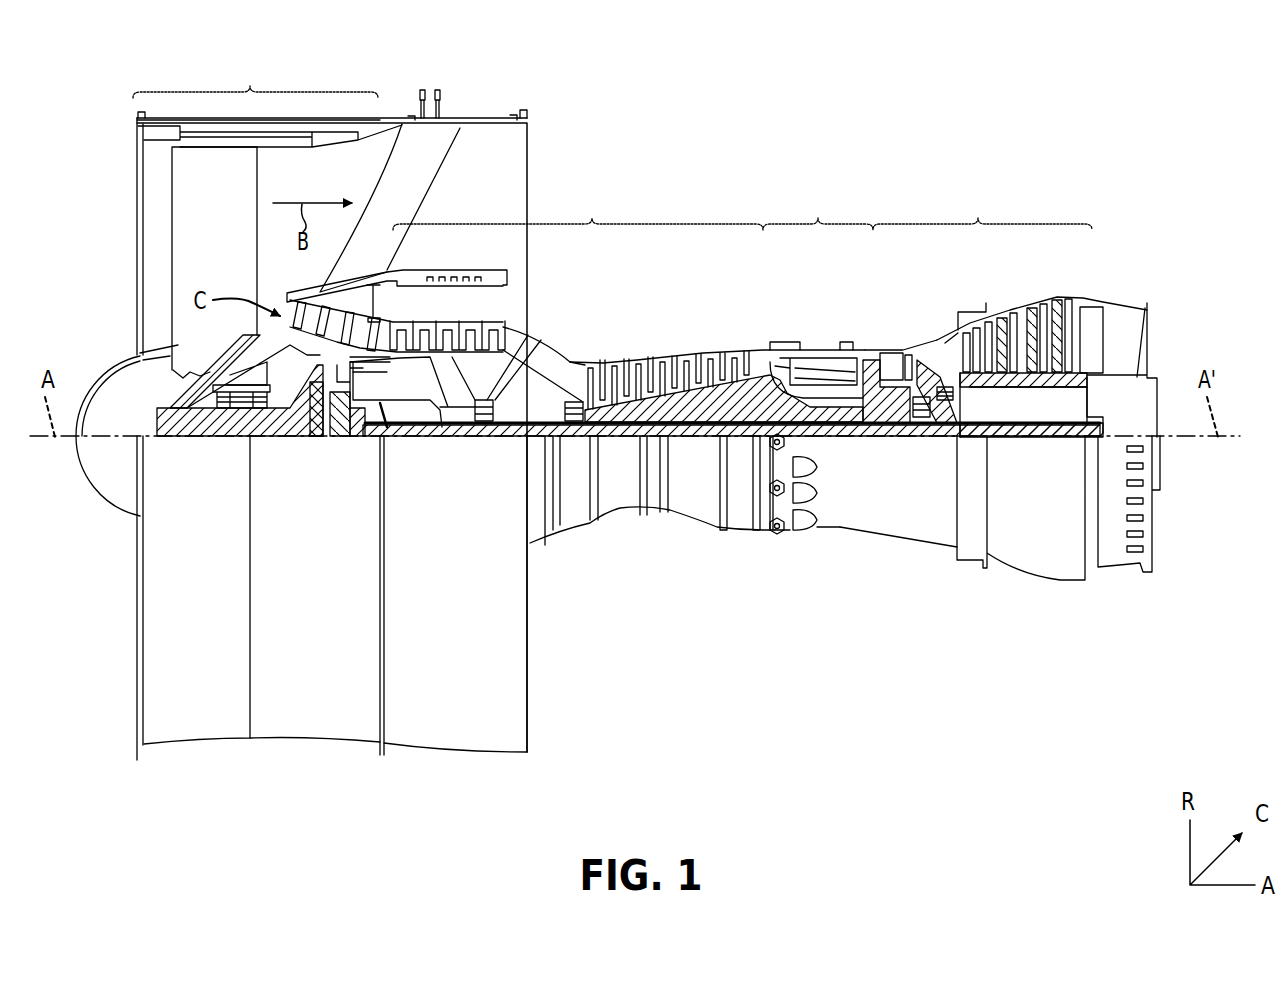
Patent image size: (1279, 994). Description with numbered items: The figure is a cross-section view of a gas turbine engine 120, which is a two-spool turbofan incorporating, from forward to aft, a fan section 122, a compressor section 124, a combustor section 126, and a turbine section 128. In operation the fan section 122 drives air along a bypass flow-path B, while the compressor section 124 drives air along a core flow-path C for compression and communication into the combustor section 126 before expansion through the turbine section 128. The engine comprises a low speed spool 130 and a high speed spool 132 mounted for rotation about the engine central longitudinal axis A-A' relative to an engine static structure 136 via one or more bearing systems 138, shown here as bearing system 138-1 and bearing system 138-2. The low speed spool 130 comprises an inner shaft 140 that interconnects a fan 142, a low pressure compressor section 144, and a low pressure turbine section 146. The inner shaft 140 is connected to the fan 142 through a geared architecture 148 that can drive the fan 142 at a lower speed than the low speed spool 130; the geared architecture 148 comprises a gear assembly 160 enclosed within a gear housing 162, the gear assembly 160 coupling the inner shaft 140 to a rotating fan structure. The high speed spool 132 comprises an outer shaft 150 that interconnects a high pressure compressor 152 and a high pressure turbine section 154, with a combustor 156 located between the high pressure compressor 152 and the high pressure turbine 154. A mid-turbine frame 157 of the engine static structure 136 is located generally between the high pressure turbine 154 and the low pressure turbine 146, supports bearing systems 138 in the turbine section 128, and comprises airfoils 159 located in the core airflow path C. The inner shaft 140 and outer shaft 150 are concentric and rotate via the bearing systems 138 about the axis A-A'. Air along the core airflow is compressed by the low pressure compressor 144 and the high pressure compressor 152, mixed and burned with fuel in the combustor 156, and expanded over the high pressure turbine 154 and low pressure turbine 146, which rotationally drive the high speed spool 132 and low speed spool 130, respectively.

The gas turbine engine 120 is at (661, 132).
The fan section 122 is at (258, 87).
The compressor section 124 is at (580, 211).
The combustor section 126 is at (818, 211).
The turbine section 128 is at (982, 211).
The low speed spool 130 is at (702, 452).
The high speed spool 132 is at (740, 403).
The engine static structure 136 is at (742, 517).
The bearing system 138 is at (930, 436).
The bearing system 138-1 is at (227, 410).
The bearing system 138-2 is at (483, 424).
The inner shaft 140 is at (550, 437).
The fan 142 is at (193, 249).
The low pressure compressor section 144 is at (462, 327).
The low pressure turbine section 146 is at (1023, 325).
The geared architecture 148 is at (347, 452).
The outer shaft 150 is at (822, 415).
The high pressure compressor 152 is at (673, 380).
The high pressure turbine section 154 is at (890, 352).
The combustor 156 is at (813, 377).
The mid-turbine frame 157 is at (930, 363).
The airfoils 159 is at (955, 383).
The gear assembly 160 is at (340, 437).
The gear housing 162 is at (350, 377).